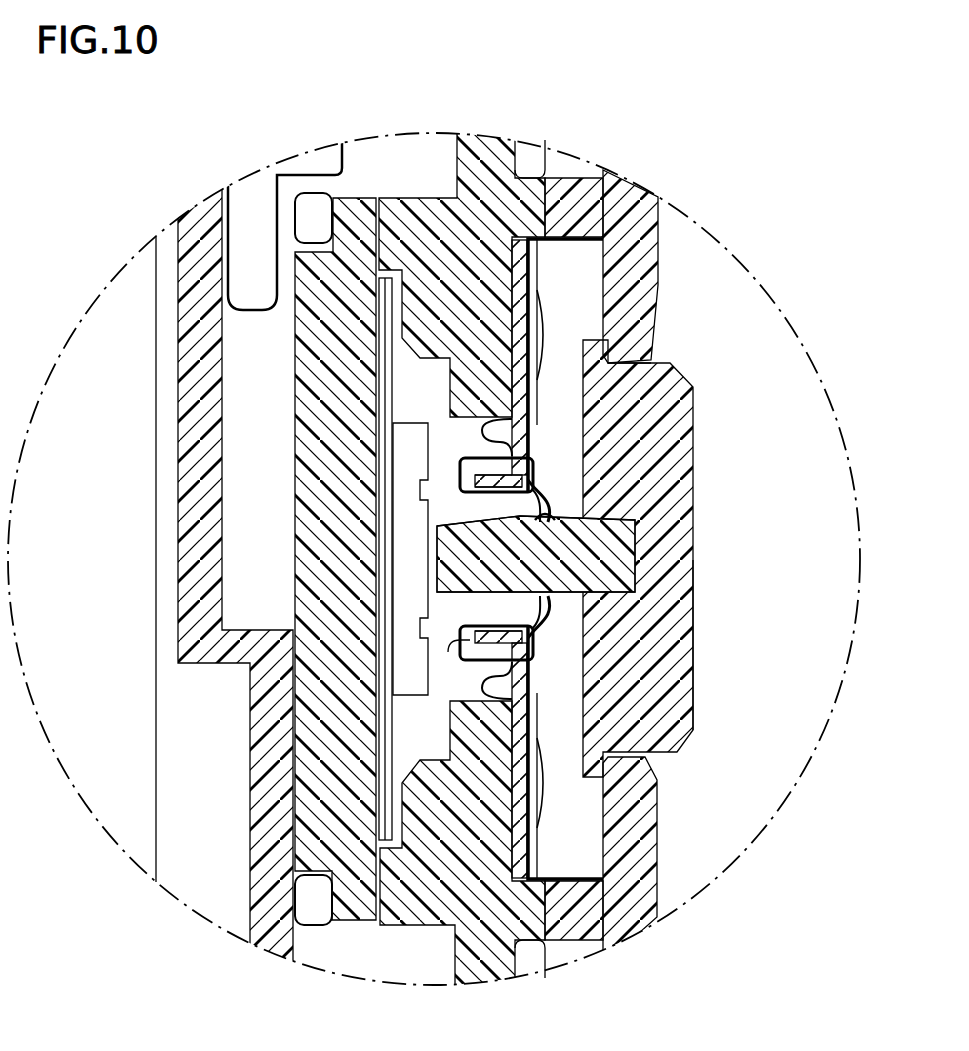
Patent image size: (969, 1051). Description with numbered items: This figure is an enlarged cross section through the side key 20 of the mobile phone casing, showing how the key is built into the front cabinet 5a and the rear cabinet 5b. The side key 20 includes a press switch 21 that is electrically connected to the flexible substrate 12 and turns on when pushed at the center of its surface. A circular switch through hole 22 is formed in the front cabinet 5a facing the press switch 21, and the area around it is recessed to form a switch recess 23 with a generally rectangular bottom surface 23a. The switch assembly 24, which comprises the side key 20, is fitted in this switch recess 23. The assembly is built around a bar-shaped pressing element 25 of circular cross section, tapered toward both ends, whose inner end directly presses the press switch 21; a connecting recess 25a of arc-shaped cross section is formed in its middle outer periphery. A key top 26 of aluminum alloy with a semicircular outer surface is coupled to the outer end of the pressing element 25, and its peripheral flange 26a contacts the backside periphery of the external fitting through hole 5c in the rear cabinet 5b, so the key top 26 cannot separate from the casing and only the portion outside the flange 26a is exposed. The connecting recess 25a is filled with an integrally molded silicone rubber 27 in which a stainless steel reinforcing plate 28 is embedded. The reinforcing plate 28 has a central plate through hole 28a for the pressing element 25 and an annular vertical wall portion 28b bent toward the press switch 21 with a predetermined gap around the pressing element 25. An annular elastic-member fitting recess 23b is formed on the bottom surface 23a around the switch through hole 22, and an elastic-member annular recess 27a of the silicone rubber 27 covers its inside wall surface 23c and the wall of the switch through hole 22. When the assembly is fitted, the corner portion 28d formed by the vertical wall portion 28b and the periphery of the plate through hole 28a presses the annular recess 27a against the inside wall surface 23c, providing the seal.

The front cabinet 5a is at (572, 915).
The rear cabinet 5b is at (645, 247).
The external fitting through hole 5c is at (628, 368).
The flexible substrate 12 is at (408, 293).
The side key 20 is at (742, 420).
The press switch 21 is at (418, 420).
The switch through hole 22 is at (455, 650).
The switch recess 23 is at (586, 233).
The bottom surface 23a is at (540, 325).
The elastic-member fitting recess 23b is at (505, 428).
The inside wall surface 23c is at (545, 483).
The switch assembly 24 is at (697, 612).
The pressing element 25 is at (540, 565).
The connecting recess 25a is at (548, 516).
The key top 26 is at (683, 395).
The flange 26a is at (645, 797).
The silicone rubber 27 is at (530, 615).
The elastic-member annular recess 27a is at (538, 745).
The reinforcing plate 28 is at (525, 302).
The plate through hole 28a is at (550, 507).
The vertical wall portion 28b is at (490, 612).
The corner portion 28d is at (500, 458).